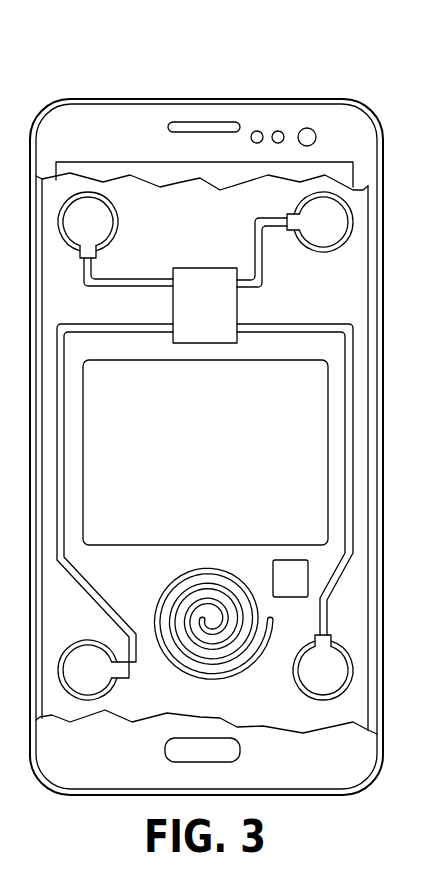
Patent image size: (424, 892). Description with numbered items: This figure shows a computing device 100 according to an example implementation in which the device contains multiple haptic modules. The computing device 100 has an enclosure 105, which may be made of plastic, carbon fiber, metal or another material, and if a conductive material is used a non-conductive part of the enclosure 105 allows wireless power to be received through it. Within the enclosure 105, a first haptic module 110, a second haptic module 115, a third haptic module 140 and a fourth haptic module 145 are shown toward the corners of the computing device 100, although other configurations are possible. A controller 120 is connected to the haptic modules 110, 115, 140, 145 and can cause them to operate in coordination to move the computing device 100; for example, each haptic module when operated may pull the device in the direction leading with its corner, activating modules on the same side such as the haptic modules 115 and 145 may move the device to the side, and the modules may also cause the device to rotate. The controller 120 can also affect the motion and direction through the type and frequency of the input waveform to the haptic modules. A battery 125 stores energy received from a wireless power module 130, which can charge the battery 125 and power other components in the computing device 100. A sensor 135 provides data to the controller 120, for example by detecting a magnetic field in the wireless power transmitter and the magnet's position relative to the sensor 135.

The computing device 100 is at (370, 100).
The enclosure 105 is at (207, 99).
The first haptic module 110 is at (118, 222).
The second haptic module 115 is at (323, 252).
The controller 120 is at (191, 315).
The battery 125 is at (191, 459).
The wireless power module 130 is at (207, 557).
The sensor 135 is at (292, 560).
The third haptic module 140 is at (112, 688).
The fourth haptic module 145 is at (301, 692).